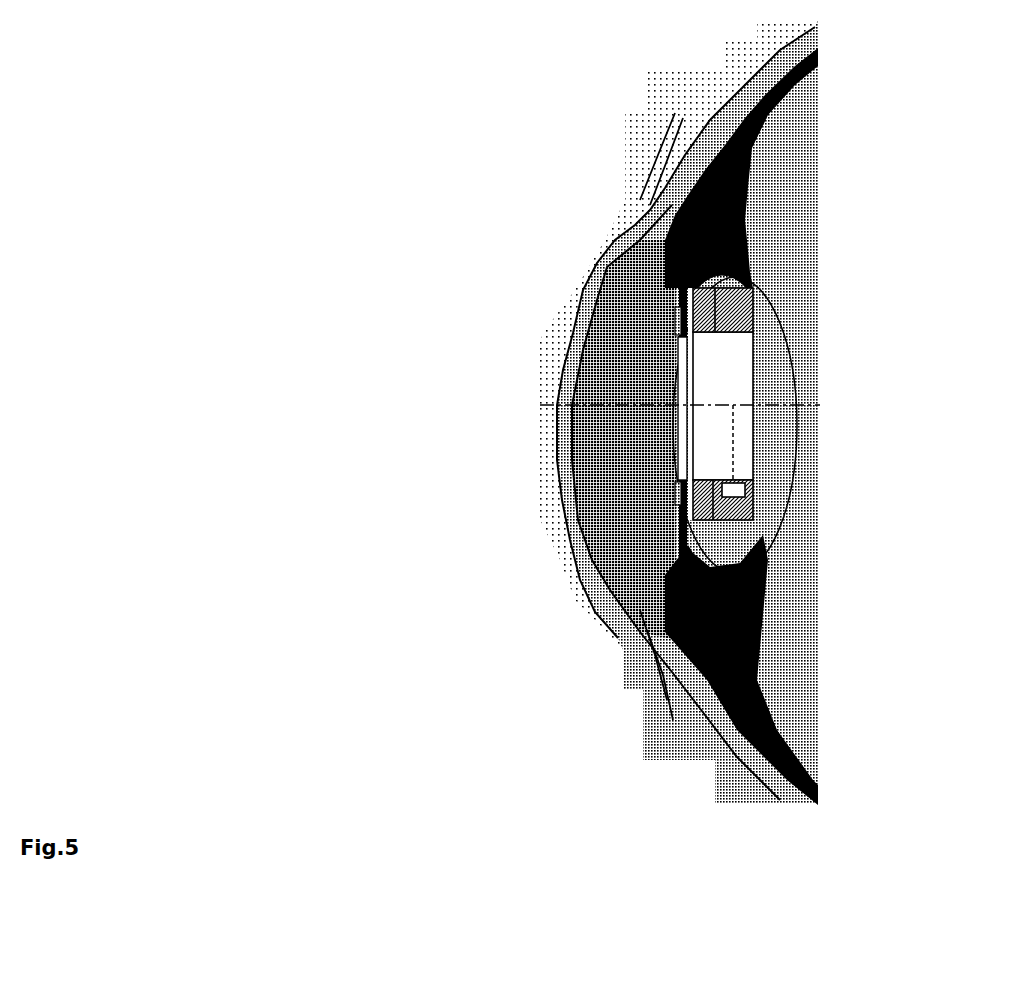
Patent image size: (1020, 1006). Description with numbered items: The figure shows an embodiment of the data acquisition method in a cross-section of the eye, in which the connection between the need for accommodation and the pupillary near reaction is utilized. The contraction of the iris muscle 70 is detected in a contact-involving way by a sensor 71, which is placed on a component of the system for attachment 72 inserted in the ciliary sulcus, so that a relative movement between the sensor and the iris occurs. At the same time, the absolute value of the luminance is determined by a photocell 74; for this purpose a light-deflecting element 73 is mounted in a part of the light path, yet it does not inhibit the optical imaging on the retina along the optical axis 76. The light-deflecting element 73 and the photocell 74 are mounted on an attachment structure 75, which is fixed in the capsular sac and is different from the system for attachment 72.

The iris muscle 70 is at (660, 290).
The sensor 71 is at (675, 318).
The system for attachment 72 is at (677, 236).
The light-deflecting element 73 is at (712, 383).
The photocell 74 is at (747, 490).
The attachment structure 75 is at (755, 290).
The optical axis 76 is at (658, 406).